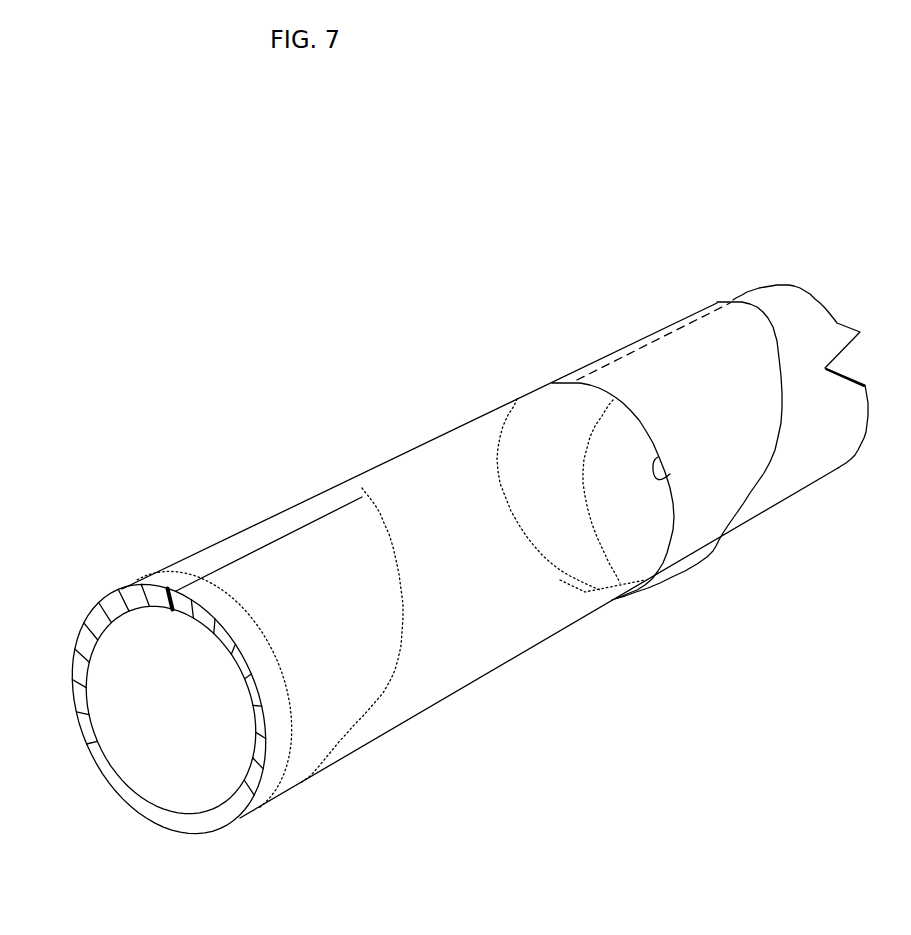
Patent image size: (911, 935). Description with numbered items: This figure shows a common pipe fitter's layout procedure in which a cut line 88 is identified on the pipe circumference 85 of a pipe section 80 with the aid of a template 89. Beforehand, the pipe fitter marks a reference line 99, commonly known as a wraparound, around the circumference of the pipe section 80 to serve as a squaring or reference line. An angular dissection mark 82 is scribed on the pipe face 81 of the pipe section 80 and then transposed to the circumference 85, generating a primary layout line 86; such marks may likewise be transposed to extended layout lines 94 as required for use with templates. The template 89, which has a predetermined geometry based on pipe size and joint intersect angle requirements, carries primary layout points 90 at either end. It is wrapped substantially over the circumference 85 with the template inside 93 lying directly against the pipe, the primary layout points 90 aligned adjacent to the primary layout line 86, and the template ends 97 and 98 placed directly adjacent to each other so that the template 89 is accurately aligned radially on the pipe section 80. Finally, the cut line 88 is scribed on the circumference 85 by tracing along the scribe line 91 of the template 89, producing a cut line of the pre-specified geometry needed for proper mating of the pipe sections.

The pipe section 80 is at (435, 397).
The pipe face 81 is at (82, 657).
The angular dissection mark 82 is at (168, 599).
The pipe circumference 85 is at (193, 555).
The primary layout line 86 is at (362, 497).
The cut line 88 is at (403, 618).
The template 89 is at (613, 303).
The primary layout points 90 is at (592, 378).
The scribe line 91 is at (765, 473).
The template inside 93 is at (670, 474).
The extended layout lines 94 is at (322, 648).
The template end 97 is at (597, 588).
The template end 98 is at (617, 590).
The reference line 99 is at (292, 742).